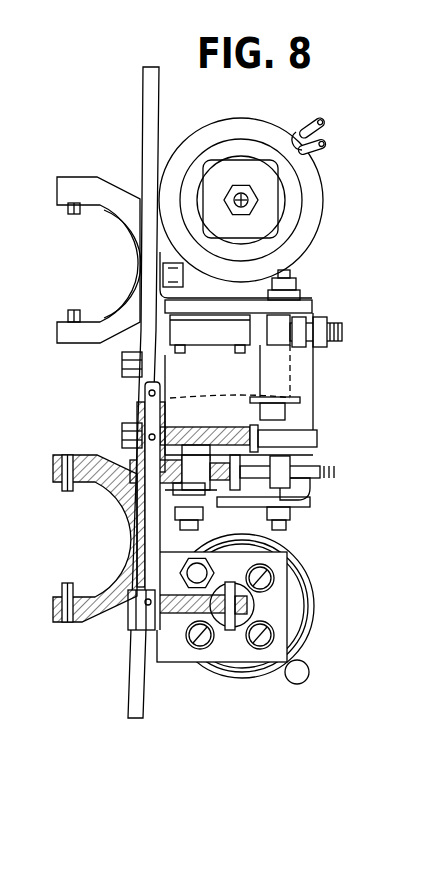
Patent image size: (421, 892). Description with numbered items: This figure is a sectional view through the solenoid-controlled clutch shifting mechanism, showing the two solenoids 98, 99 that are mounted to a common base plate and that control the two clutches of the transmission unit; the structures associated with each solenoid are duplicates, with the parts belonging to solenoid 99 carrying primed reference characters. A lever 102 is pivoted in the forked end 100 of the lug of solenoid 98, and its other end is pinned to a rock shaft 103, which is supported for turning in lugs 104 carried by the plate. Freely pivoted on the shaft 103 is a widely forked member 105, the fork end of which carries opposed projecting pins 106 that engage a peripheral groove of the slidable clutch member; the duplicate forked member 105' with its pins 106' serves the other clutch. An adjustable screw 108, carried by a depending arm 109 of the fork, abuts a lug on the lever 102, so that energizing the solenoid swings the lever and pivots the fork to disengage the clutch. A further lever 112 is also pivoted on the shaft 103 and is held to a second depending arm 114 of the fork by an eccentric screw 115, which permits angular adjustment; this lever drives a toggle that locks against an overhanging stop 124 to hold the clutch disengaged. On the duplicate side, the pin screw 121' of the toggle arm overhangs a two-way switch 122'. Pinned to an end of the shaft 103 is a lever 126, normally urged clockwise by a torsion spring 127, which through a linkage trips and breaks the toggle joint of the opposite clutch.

The solenoid 98 is at (238, 678).
The solenoid 99 is at (323, 189).
The forked end 100 is at (246, 592).
The lever 102 is at (194, 641).
The rock shaft 103 is at (133, 632).
The lugs 104 is at (128, 622).
The forked member 105 is at (69, 622).
The forked member 105' is at (79, 275).
The projecting pins 106 is at (51, 519).
The projecting pins 106' is at (66, 262).
The adjustable screw 108 is at (205, 574).
The depending arm 109 is at (124, 572).
The lever 112 is at (130, 463).
The second depending arm 114 is at (205, 515).
The eccentric screw 115 is at (196, 456).
The pin screw 121' is at (323, 314).
The two-way switch 122' is at (217, 334).
The overhanging stop 124 is at (308, 503).
The lever 126 is at (183, 432).
The torsion spring 127 is at (137, 407).